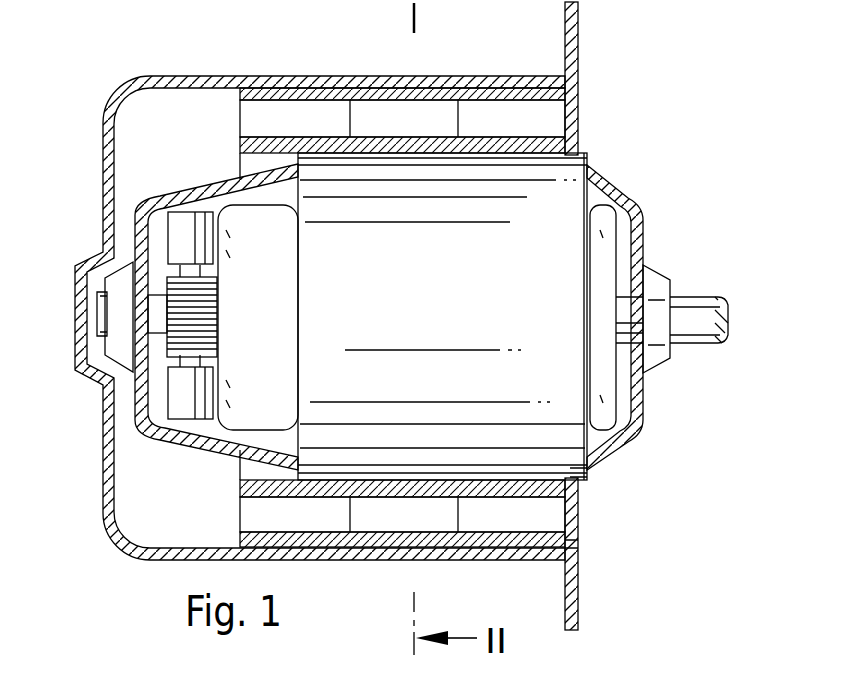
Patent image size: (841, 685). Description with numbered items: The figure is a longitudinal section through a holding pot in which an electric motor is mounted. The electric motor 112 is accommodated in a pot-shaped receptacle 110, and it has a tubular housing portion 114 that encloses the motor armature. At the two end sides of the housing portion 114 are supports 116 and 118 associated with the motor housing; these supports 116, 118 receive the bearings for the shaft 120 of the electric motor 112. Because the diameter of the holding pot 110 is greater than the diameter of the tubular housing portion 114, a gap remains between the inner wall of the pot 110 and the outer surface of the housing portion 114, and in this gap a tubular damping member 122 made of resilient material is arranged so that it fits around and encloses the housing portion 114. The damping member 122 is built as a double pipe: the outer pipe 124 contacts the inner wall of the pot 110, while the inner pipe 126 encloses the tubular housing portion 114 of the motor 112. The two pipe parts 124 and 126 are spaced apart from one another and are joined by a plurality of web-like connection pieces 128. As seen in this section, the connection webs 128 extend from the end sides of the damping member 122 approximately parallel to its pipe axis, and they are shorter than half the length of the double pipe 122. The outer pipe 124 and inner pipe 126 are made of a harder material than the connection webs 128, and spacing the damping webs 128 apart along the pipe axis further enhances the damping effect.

The pot-shaped receptacle 110 is at (186, 76).
The electric motor 112 is at (596, 161).
The tubular housing portion 114 is at (588, 470).
The support 116 is at (167, 195).
The support 118 is at (637, 204).
The shaft 120 is at (690, 312).
The damping member 122 is at (584, 516).
The outer pipe 124 is at (572, 545).
The inner pipe 126 is at (578, 155).
The connection webs 128 is at (313, 108).